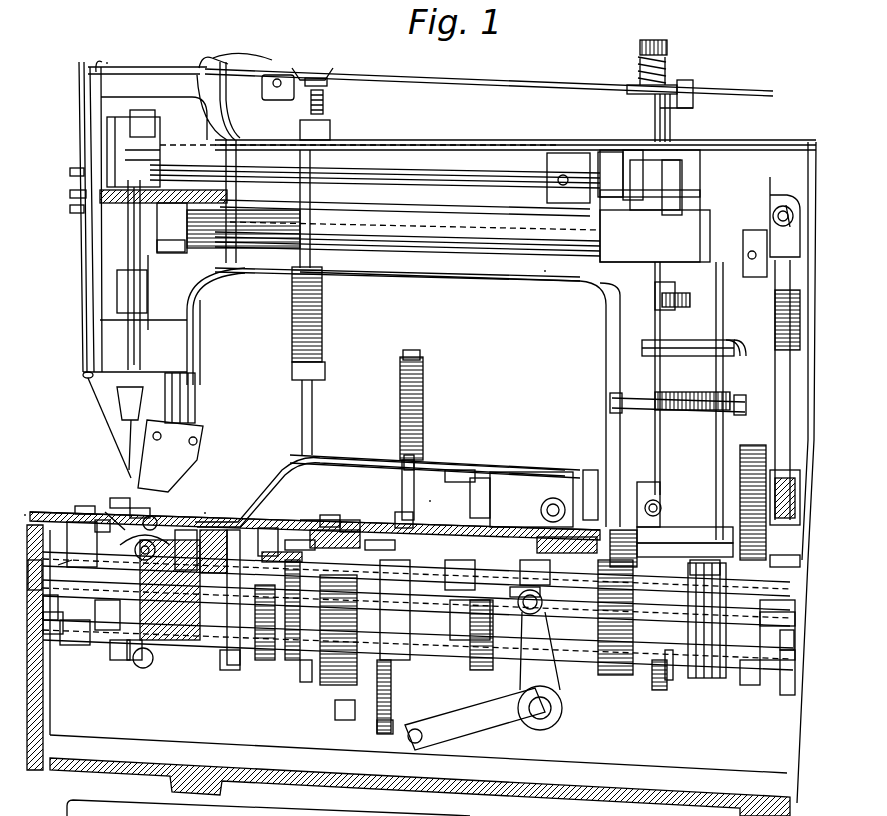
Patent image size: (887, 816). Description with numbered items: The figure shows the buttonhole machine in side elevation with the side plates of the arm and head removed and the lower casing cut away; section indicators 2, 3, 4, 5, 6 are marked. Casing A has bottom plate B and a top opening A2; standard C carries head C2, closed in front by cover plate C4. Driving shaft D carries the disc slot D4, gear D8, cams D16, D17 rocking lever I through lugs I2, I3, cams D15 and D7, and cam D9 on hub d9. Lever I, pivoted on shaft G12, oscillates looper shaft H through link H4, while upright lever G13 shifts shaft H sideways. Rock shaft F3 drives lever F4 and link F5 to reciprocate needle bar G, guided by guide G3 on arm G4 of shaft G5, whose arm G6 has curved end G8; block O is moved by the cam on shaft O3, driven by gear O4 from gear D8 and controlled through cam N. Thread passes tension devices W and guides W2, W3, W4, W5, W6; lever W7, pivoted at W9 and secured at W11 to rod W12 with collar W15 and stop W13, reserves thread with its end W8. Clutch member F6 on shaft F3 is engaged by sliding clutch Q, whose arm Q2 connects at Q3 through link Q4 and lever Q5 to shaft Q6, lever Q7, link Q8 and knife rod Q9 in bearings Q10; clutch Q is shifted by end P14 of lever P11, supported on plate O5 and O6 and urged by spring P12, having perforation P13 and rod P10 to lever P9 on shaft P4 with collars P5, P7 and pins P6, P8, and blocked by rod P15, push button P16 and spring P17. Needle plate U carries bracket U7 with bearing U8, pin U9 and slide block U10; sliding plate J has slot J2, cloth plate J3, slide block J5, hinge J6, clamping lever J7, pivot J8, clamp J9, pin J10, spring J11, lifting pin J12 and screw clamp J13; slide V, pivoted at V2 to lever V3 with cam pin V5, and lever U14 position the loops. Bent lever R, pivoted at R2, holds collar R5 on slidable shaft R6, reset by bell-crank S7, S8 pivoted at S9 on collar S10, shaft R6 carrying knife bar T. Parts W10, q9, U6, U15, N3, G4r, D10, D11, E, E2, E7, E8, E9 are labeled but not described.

The section line 3- 3 is at (107, 62).
The section line 2- 2 is at (25, 480).
The section line 4- 4 is at (205, 512).
The section line 5- 5 is at (430, 500).
The section line 6- 6 is at (545, 270).
The head casing C4 is at (94, 78).
The thread guide W3 is at (99, 60).
The presser bar cap F4 is at (143, 112).
The thread guide hook W8 is at (204, 60).
The thread guide wire W2 is at (241, 60).
The thread guide plate W7 is at (278, 75).
The tension bracket W9 is at (301, 71).
The tension plate W10 is at (333, 78).
The tension screw W11 is at (326, 103).
The tension block W13 is at (330, 130).
The presser bar bracket F5 is at (107, 140).
The thread guide W5 is at (72, 172).
The bracket P16 is at (72, 195).
The thread guide W4 is at (72, 212).
The bar P17 is at (130, 204).
The needle bar G is at (135, 241).
The block q9 is at (165, 247).
The block Q8 is at (170, 250).
The shaft Q7 is at (222, 231).
The needle bar clamp G3 is at (118, 295).
The needle bar guide G4 is at (148, 315).
The frame curve Q9 is at (205, 290).
The frame column C2 is at (203, 340).
The thread eyelet W6 is at (84, 375).
The bushing Q10 is at (196, 395).
The screw J8 is at (160, 510).
The lever U8 is at (200, 520).
The thread / rod W is at (262, 440).
The table plate U is at (50, 512).
The part J9 is at (120, 500).
The part H is at (115, 512).
The block U6 is at (182, 534).
The block U7 is at (262, 522).
The block U15 is at (300, 525).
The bar U10 is at (310, 515).
The part J3 is at (327, 520).
The part V2 is at (352, 520).
The part J12 is at (400, 530).
The bar J10 is at (404, 493).
The spring J11 is at (402, 395).
The rod J7 is at (400, 445).
The part J13 is at (455, 476).
The lever bar J5 is at (490, 480).
The lever J is at (482, 492).
The block J2 is at (535, 495).
The block J6 is at (590, 480).
The shaft F3 is at (452, 160).
The rod P15 is at (470, 213).
The shaft Q6 is at (470, 250).
The arm underside G5 is at (362, 278).
The spring W15 is at (322, 360).
The block W12 is at (312, 396).
The block F6 is at (565, 158).
The block Q4 is at (604, 152).
The block Q3 is at (630, 158).
The casting Q is at (650, 160).
The block Q2 is at (650, 163).
The bar P14 is at (685, 194).
The bracket Q5 is at (635, 247).
The block P13 is at (662, 287).
The rod P11 is at (657, 318).
The bar P10 is at (688, 352).
The elbow P9 is at (738, 350).
The column G6 is at (787, 320).
The spring P12 is at (690, 395).
The rod P4 is at (722, 383).
The frame C is at (606, 362).
The gear O is at (748, 447).
The block N3 is at (780, 478).
The block N is at (790, 500).
The screw O6 is at (656, 504).
The rack O4 is at (622, 528).
The bar O5 is at (685, 532).
The bar O3 is at (685, 551).
The part P5 is at (690, 568).
The part G8 is at (785, 549).
The part R5 is at (790, 612).
The part G4r is at (790, 640).
The part R2 is at (530, 580).
The part S10 is at (545, 592).
The pivot R6 is at (545, 605).
The block d9 is at (458, 612).
The part B is at (460, 571).
The part V3 is at (300, 546).
The bed part A2 is at (338, 548).
The part V5 is at (380, 550).
The part U14 is at (271, 551).
The lever V is at (151, 547).
The block T is at (80, 537).
The part H4 is at (72, 575).
The part I3 is at (43, 603).
The part I is at (73, 645).
The part D17 is at (107, 615).
The part I2 is at (120, 657).
The part G13 is at (133, 657).
The part D16 is at (148, 668).
The bar U9 is at (200, 630).
The part D15 is at (227, 672).
The gear D4 is at (265, 665).
The gear D10 is at (294, 665).
The part E9 is at (305, 690).
The part D11 is at (338, 705).
The gear E is at (345, 700).
The part E7 is at (396, 672).
The bar E8 is at (392, 715).
The part E2 is at (385, 730).
The gear D9 is at (476, 668).
The lever R is at (565, 808).
The hub S7 is at (538, 700).
The link S8 is at (475, 719).
The pivot S9 is at (533, 722).
The gear D8 is at (612, 677).
The gear D7 is at (660, 690).
The part P8 is at (666, 680).
The bar P7 is at (710, 678).
The part P6 is at (754, 688).
The main shaft D is at (770, 680).
The part G12 is at (790, 702).
The base A is at (45, 775).